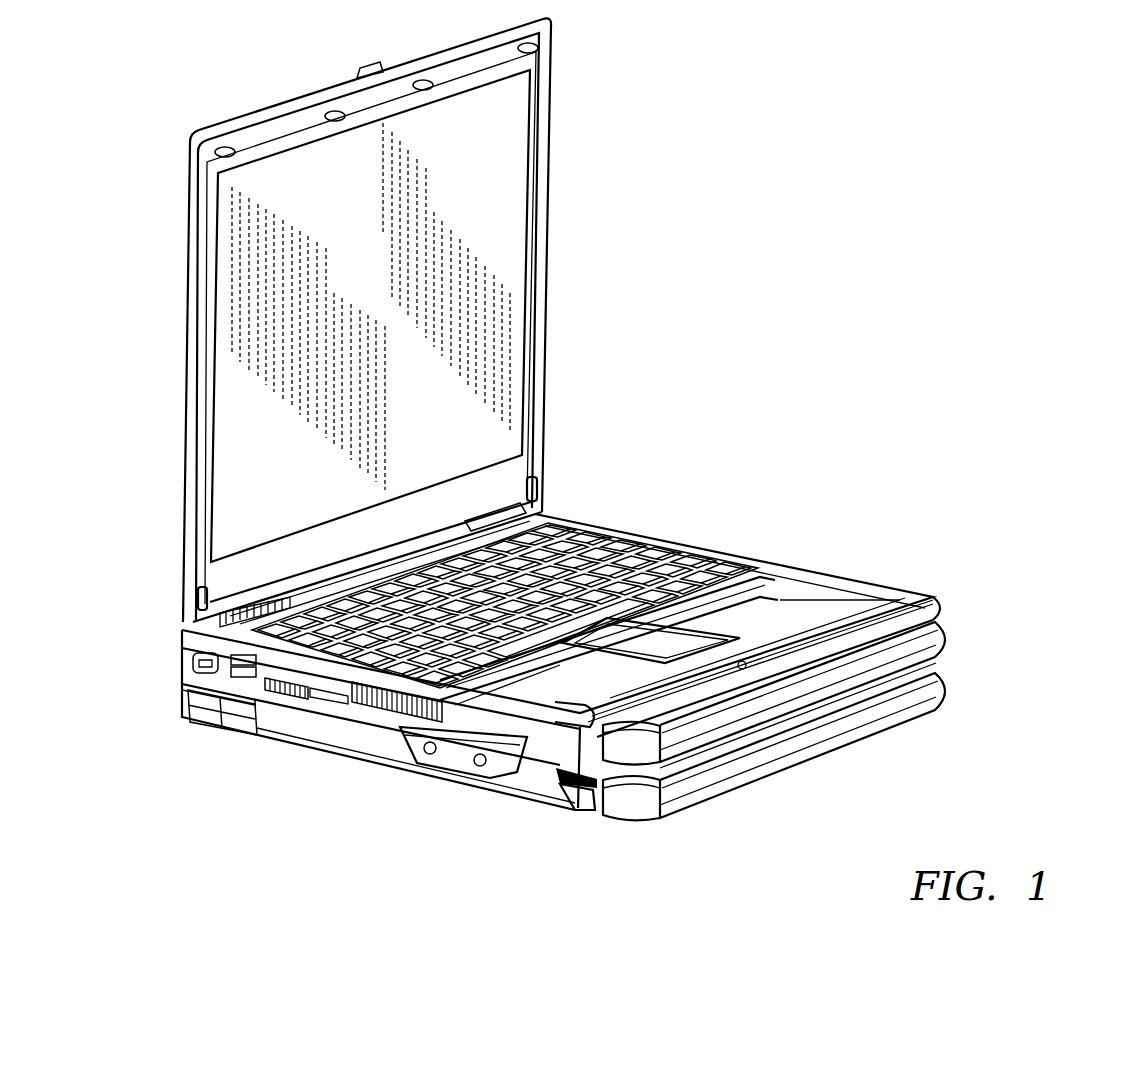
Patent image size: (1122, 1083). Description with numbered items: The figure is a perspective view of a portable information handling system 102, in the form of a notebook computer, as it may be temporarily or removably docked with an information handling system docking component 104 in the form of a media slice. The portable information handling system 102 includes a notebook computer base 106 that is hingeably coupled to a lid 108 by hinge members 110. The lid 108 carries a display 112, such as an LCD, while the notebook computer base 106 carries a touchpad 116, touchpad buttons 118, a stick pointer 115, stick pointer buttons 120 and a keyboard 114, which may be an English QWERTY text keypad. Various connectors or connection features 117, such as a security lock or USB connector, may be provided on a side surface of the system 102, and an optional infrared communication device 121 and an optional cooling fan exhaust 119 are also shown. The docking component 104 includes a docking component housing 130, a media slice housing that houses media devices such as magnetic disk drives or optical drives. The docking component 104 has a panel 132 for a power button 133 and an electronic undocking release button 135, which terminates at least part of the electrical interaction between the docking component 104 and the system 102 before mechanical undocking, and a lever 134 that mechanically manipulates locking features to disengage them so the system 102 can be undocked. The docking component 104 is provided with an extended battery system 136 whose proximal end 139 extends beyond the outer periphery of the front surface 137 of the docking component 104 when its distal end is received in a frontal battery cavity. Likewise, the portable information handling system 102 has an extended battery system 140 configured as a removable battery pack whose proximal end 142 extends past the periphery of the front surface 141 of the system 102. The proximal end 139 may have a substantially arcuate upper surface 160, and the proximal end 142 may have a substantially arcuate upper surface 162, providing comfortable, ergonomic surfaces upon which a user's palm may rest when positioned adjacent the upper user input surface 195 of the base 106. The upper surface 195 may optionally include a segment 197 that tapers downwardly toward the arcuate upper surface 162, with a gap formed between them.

The portable information handling system 102 is at (910, 600).
The information handling system docking component 104 is at (498, 790).
The notebook computer base 106 is at (185, 645).
The lid 108 is at (178, 608).
The hinge members 110 is at (510, 503).
The display 112 is at (500, 200).
The keyboard 114 is at (628, 565).
The stick pointer 115 is at (505, 574).
The touchpad 116 is at (715, 585).
The connectors or connection features 117 is at (185, 692).
The touchpad buttons 118 is at (715, 628).
The cooling fan exhaust 119 is at (392, 715).
The stick pointer buttons 120 is at (705, 567).
The infrared communication device 121 is at (333, 705).
The docking component housing 130 is at (290, 730).
The panel 132 is at (427, 757).
The power button 133 is at (415, 762).
The lever 134 is at (220, 733).
The electronic undocking release button 135 is at (475, 768).
The extended battery system 136 is at (948, 700).
The front surface 137 is at (595, 800).
The proximal end 139 is at (632, 803).
The extended battery system 140 is at (842, 685).
The front surface 141 is at (580, 745).
The proximal end 142 is at (650, 745).
The substantially arcuate upper surface 160 is at (925, 680).
The substantially arcuate upper surface 162 is at (925, 633).
The upper user input surface 195 is at (855, 598).
The segment 197 is at (925, 615).